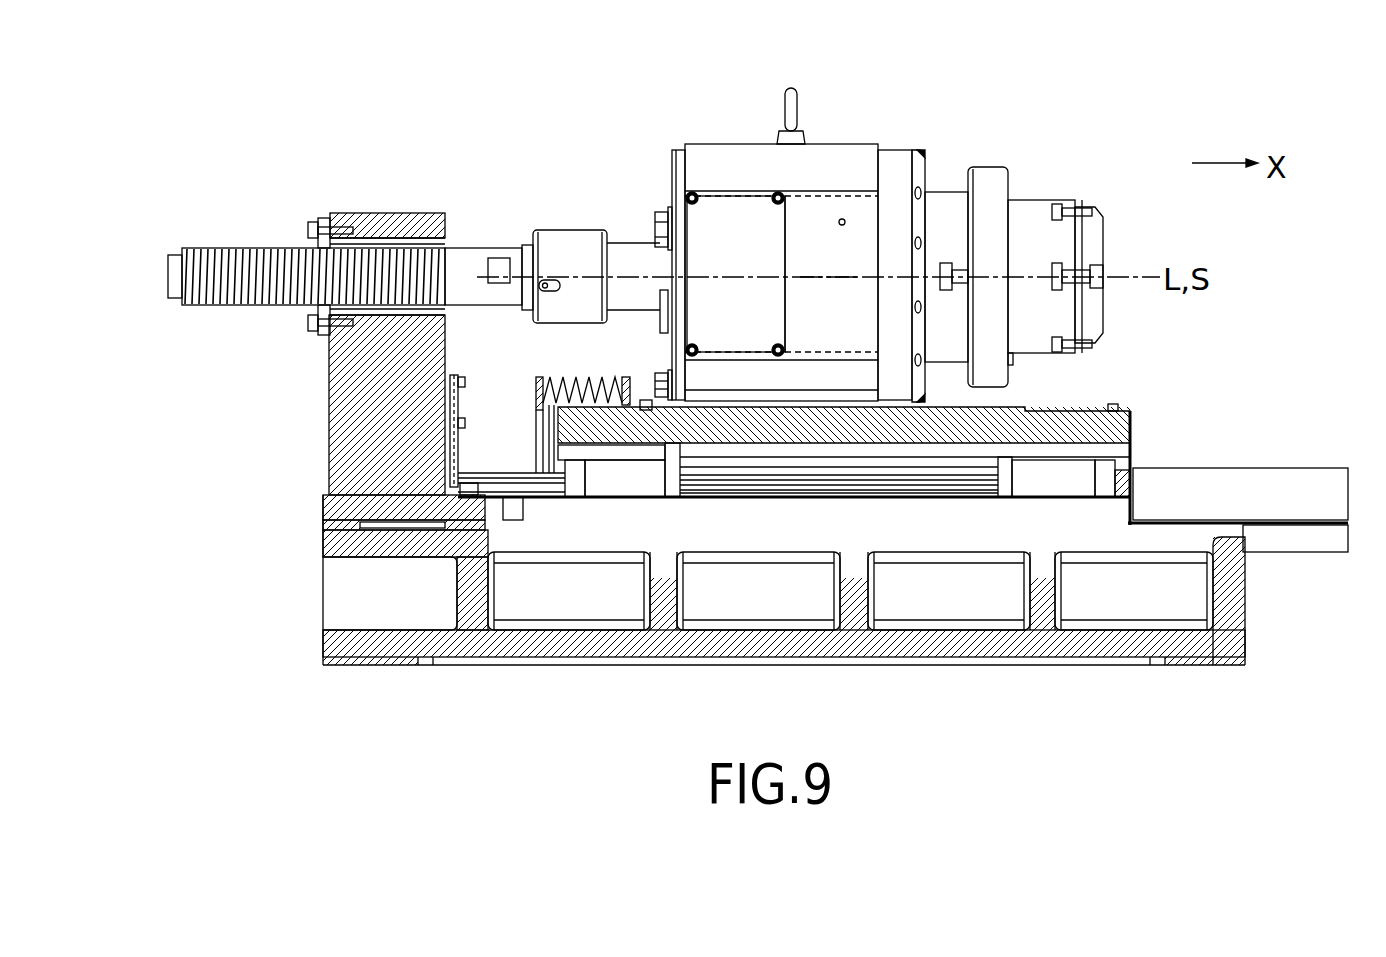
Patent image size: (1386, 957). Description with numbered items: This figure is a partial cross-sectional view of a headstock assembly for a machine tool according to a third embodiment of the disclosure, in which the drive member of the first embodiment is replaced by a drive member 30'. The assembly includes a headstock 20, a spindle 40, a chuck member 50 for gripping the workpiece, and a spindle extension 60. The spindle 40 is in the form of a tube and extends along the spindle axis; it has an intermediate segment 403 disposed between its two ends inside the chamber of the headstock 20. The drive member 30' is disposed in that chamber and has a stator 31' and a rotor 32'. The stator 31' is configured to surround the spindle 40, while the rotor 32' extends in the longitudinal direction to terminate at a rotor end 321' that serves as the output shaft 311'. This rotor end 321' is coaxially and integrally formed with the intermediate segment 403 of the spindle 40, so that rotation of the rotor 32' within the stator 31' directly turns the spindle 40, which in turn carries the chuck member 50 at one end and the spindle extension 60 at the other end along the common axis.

The spindle extension 60 is at (232, 232).
The spindle 40 is at (625, 244).
The rotor end 321' is at (635, 156).
The output shaft 311' is at (663, 385).
The drive member 30' is at (825, 214).
The rotor 32' is at (735, 217).
The stator 31' is at (810, 217).
The intermediate segment 403 is at (827, 275).
The headstock 20 is at (882, 124).
The chuck member 50 is at (1080, 180).